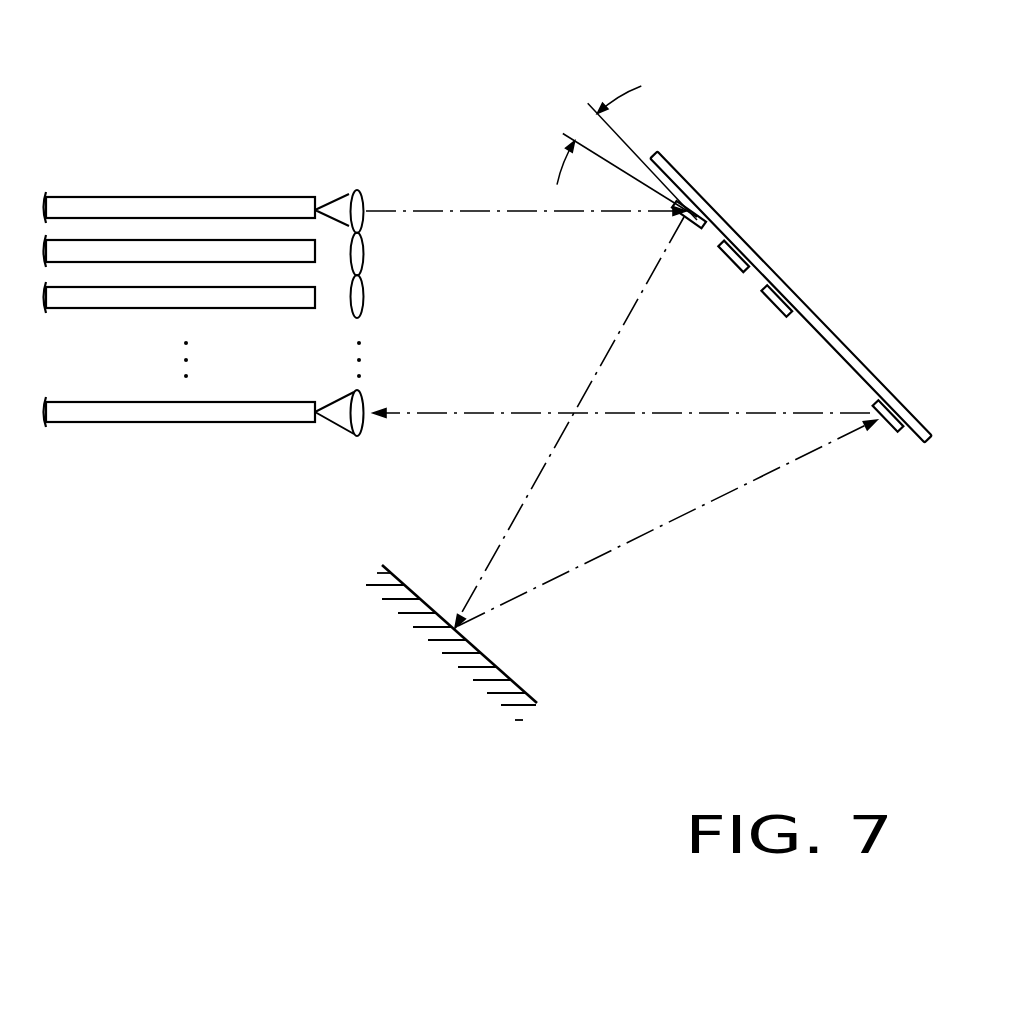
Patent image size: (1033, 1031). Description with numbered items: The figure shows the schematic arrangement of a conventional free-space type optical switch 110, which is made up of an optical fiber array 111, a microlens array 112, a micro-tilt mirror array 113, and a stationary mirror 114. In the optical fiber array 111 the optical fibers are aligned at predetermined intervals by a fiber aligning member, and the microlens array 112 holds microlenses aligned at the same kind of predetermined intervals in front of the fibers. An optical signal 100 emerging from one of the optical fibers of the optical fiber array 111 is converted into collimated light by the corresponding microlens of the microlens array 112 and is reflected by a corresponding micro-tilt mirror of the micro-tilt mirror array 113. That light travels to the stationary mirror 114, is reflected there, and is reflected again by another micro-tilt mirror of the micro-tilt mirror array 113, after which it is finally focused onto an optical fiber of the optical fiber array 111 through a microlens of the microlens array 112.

The optical switch 110 is at (553, 42).
The optical fiber array 111 is at (123, 187).
The microlens array 112 is at (356, 176).
The optical signal 100 is at (428, 200).
The micro-tilt mirror array 113 is at (670, 146).
The stationary mirror 114 is at (518, 687).